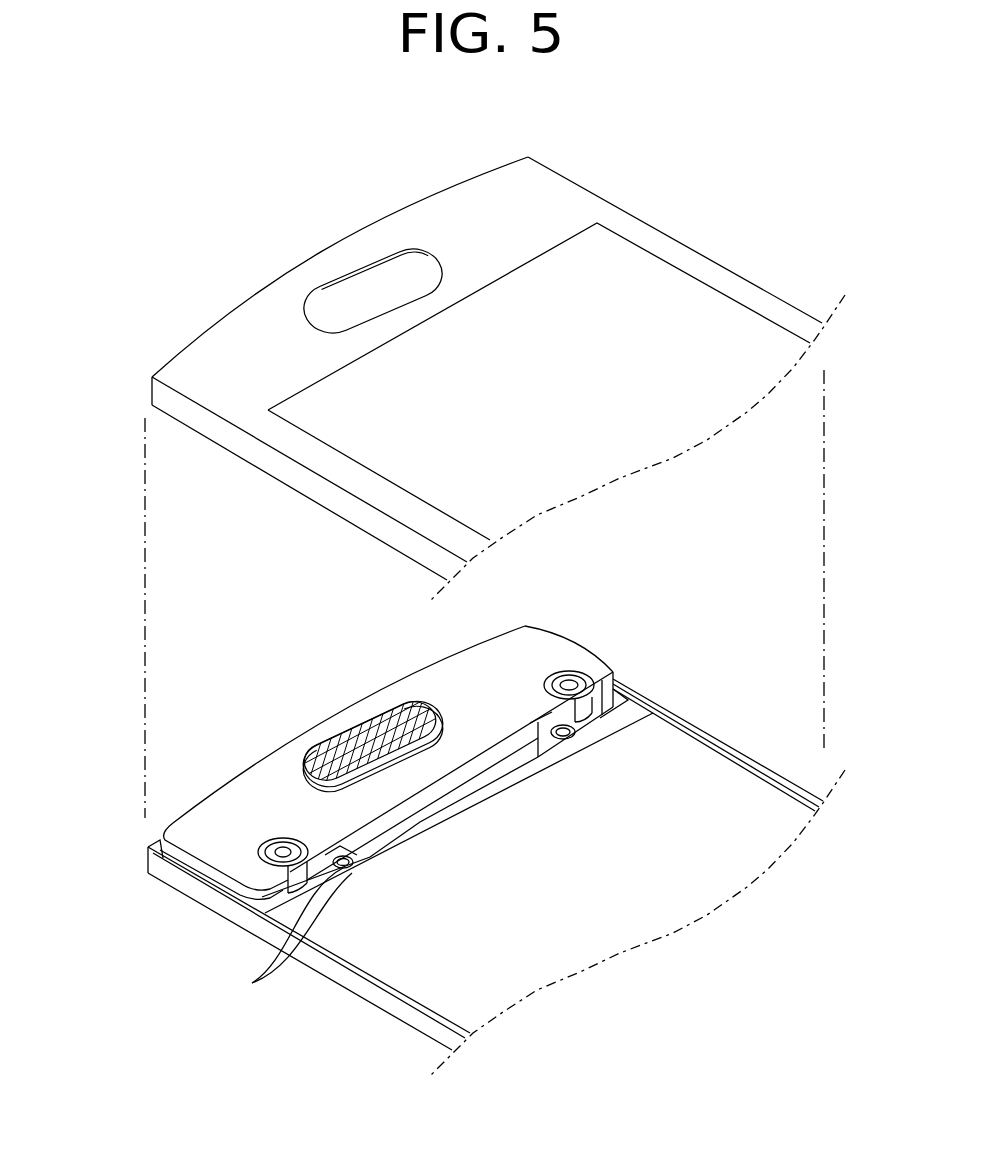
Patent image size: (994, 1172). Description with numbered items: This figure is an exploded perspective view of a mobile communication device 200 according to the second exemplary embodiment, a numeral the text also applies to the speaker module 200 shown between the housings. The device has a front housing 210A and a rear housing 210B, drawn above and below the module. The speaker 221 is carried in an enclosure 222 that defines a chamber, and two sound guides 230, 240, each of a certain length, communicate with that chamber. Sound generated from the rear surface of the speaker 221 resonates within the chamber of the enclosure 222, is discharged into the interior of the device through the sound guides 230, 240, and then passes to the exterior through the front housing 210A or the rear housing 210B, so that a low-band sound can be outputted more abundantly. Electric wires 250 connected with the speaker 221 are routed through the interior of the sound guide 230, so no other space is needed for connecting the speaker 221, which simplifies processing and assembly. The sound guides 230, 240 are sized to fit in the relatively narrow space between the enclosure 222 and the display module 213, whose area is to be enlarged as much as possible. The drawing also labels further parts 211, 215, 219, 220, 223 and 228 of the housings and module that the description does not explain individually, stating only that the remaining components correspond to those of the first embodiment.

The mobile communication device 200 is at (134, 721).
The front housing 210A is at (152, 395).
The rear housing 210B is at (178, 887).
The sound hole 211 is at (346, 275).
The display module 213 is at (403, 977).
The recess of upper case 215 is at (615, 247).
The boss 219 is at (615, 684).
The speaker module 220 is at (270, 748).
The speaker 221 is at (380, 722).
The enclosure 222 is at (548, 647).
The end portion of speaker module 223 is at (258, 842).
The speaker grille 228 is at (337, 732).
The sound guide 230 is at (340, 856).
The sound guide 240 is at (557, 720).
The electric wires 250 is at (284, 933).